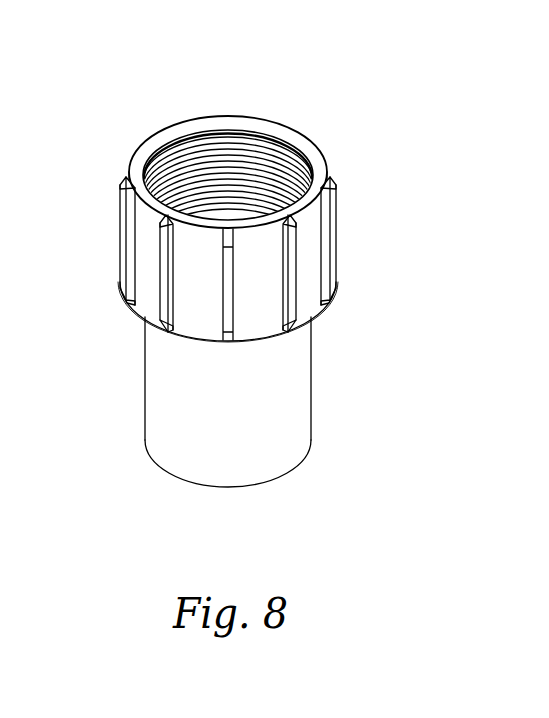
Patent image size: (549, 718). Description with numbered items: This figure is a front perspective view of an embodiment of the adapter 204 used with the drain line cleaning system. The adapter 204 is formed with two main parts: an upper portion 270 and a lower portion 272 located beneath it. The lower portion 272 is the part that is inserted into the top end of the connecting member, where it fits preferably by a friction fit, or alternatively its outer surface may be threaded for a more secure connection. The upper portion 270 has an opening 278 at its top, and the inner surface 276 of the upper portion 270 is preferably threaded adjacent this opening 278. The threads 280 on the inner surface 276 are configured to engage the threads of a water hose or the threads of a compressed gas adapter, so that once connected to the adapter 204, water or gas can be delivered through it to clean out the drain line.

The adapter 204 is at (333, 250).
The upper portion 270 is at (95, 175).
The lower portion 272 is at (95, 307).
The inner surface 276 is at (184, 160).
The opening 278 is at (303, 145).
The threads 280 is at (268, 148).